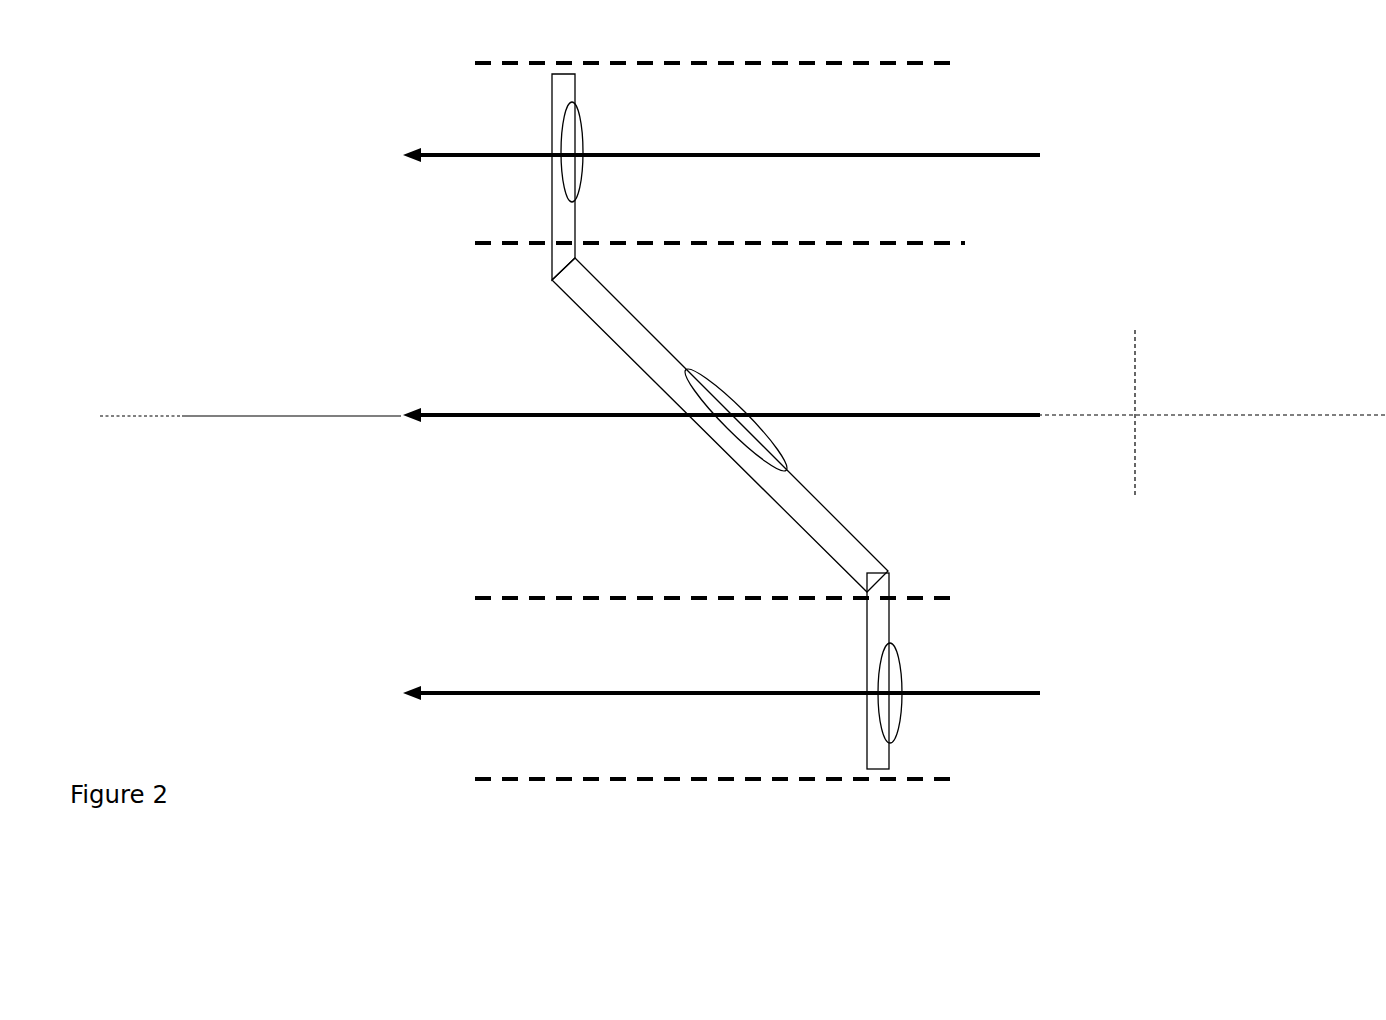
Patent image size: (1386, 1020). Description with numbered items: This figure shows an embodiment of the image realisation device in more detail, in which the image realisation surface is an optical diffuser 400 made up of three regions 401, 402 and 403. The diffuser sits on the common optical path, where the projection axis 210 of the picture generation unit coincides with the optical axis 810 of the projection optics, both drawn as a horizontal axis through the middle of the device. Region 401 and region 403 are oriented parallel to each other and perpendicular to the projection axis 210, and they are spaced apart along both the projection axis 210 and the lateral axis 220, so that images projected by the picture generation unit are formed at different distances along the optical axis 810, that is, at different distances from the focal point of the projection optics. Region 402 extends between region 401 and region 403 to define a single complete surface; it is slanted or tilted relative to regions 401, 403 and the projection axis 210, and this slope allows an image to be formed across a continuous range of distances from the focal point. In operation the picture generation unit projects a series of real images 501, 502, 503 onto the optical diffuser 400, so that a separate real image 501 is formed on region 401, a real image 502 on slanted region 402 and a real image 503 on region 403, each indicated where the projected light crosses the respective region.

The optical diffuser 400 is at (496, 100).
The first region 401 is at (563, 98).
The slanted region 402 is at (600, 293).
The third region 403 is at (878, 637).
The first real image 501 is at (582, 162).
The second real image 502 is at (727, 390).
The third real image 503 is at (902, 702).
The optical axis 810 is at (120, 415).
The projection axis 210 is at (1233, 413).
The lateral axis 220 is at (1138, 345).